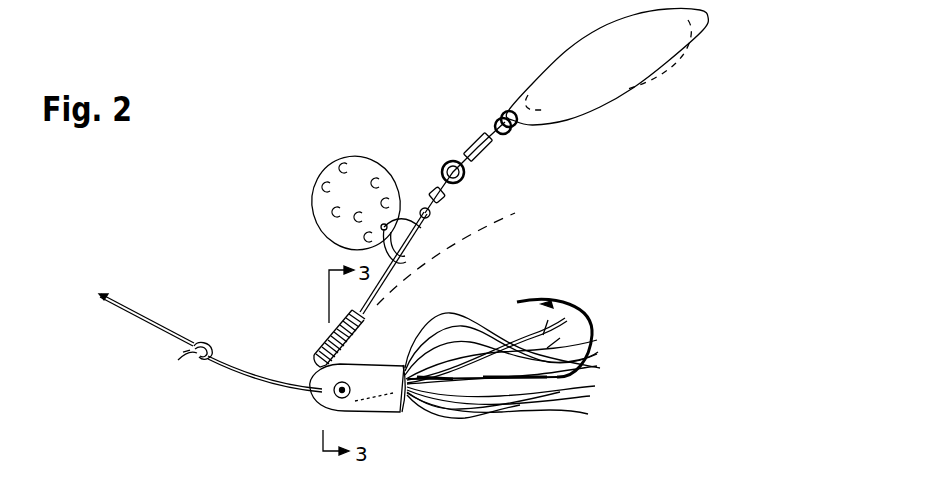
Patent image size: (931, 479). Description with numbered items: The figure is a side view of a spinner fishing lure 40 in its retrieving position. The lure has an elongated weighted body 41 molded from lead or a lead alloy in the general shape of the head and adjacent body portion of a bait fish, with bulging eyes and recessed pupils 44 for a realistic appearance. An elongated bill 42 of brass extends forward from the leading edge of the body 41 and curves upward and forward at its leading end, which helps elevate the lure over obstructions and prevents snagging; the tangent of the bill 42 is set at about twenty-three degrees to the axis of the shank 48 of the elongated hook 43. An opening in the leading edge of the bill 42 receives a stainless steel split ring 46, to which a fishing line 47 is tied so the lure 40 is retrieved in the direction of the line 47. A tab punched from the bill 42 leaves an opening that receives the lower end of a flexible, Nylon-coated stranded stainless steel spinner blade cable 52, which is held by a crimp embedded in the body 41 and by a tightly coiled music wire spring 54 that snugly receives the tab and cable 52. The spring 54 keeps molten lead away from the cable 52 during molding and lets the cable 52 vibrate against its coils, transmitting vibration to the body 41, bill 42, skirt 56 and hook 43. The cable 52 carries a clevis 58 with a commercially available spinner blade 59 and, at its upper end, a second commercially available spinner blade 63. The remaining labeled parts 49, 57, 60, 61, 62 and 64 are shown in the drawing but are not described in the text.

The spinner fishing lure 40 is at (268, 249).
The elongated weighted body 41 is at (383, 391).
The elongated bill 42 is at (289, 390).
The elongated hook 43 is at (590, 318).
The recessed pupils 44 is at (345, 398).
The stainless steel split ring 46 is at (206, 364).
The fishing line 47 is at (151, 330).
The shank 48 is at (446, 388).
The hook barb 49 is at (540, 301).
The flexible spinner blade cable 52 is at (397, 292).
The spring 54 is at (334, 342).
The skirt 56 is at (408, 395).
The skirt 57 is at (592, 376).
The clevis 58 is at (385, 255).
The spinner blade 59 is at (366, 204).
The ring 60 is at (458, 185).
The bead 61 is at (440, 205).
The swivel 62 is at (486, 151).
The spinner blade 63 is at (618, 72).
The bead 64 is at (424, 207).